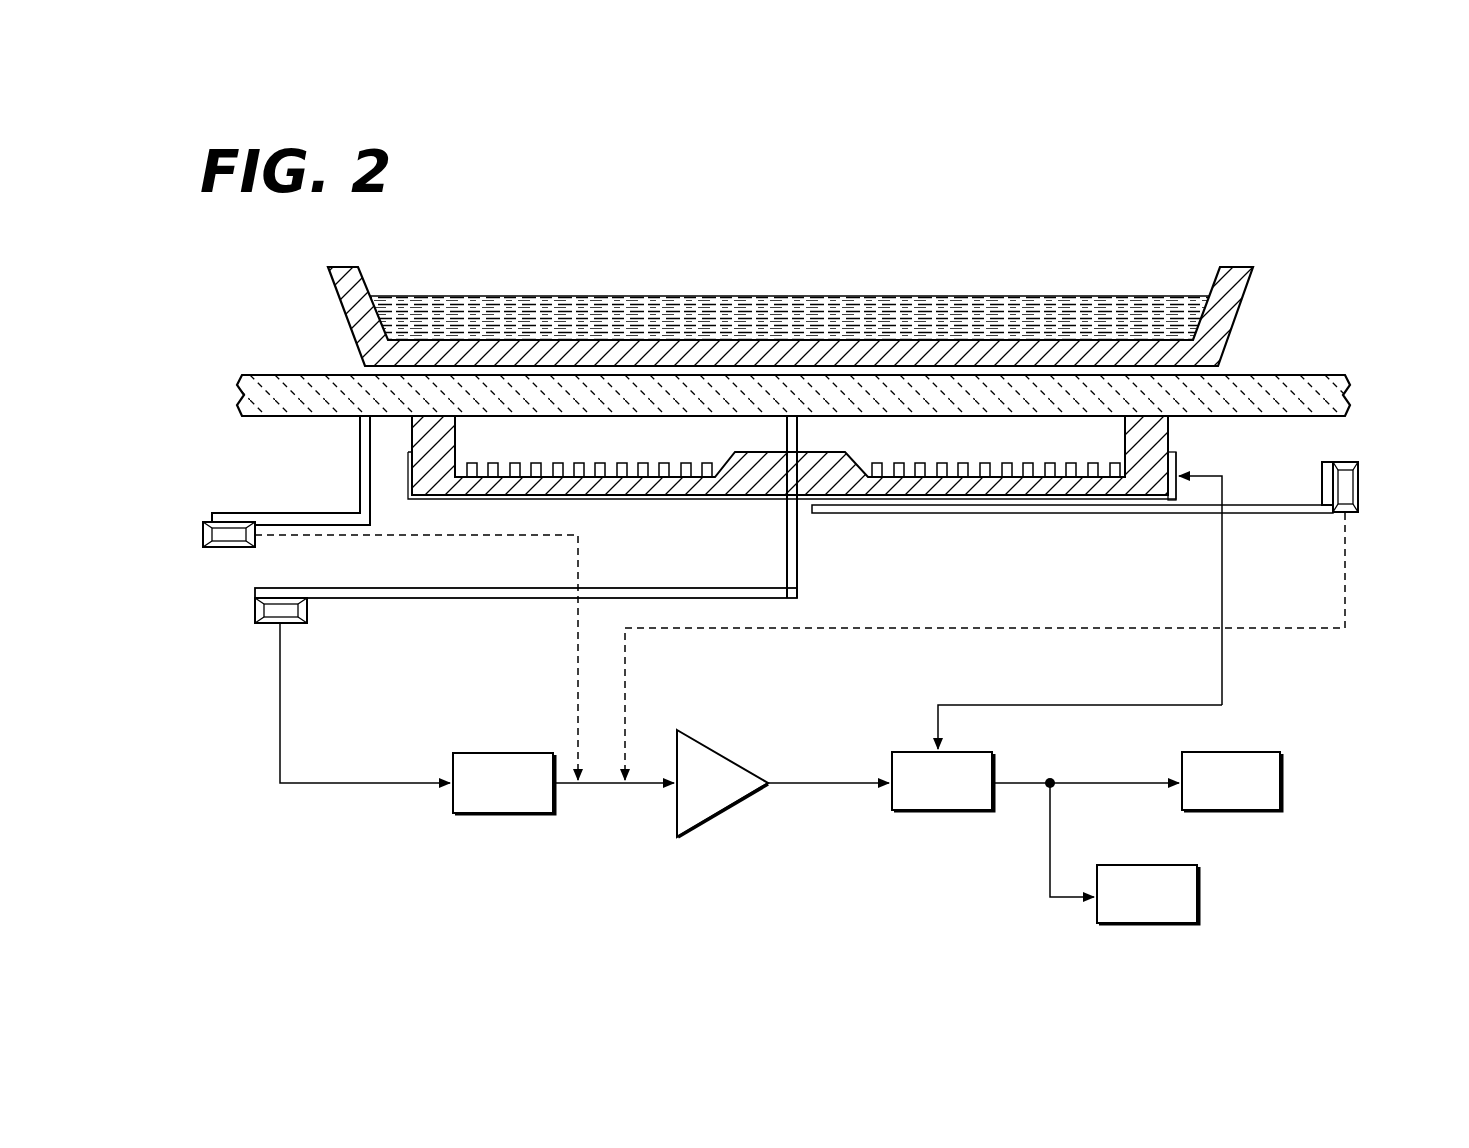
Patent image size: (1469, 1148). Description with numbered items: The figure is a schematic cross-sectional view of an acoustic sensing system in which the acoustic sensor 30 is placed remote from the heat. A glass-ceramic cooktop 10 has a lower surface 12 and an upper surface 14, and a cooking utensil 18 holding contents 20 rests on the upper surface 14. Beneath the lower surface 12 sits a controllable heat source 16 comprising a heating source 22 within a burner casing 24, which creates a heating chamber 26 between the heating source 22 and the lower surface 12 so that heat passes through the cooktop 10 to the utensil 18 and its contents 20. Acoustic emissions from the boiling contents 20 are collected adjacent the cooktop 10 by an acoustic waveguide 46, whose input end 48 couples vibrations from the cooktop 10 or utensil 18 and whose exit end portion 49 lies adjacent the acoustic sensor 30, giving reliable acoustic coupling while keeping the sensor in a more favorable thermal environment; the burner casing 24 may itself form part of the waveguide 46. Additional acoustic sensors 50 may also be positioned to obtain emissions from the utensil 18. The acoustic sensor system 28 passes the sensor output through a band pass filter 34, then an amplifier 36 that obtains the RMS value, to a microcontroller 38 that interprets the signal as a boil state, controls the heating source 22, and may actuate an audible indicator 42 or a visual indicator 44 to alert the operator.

The cooktop 10 is at (1355, 398).
The lower surface 12 is at (1310, 418).
The upper surface 14 is at (1265, 375).
The controllable heat source 16 is at (612, 499).
The cooking utensil 18 is at (1232, 266).
The contents 20 is at (761, 295).
The heating source 22 is at (1022, 462).
The burner casing 24 is at (1178, 453).
The heating chamber 26 is at (592, 449).
The acoustic sensor system 28 is at (390, 825).
The acoustic sensor 30 is at (262, 625).
The band pass filter 34 is at (521, 800).
The amplifier 36 is at (724, 800).
The microcontroller 38 is at (959, 800).
The audible indicator 42 is at (1248, 800).
The visual indicator 44 is at (1164, 913).
The acoustic waveguide 46 is at (383, 599).
The input end 48 is at (800, 418).
The exit end portion 49 is at (283, 588).
The additional acoustic sensor 50 is at (203, 535).